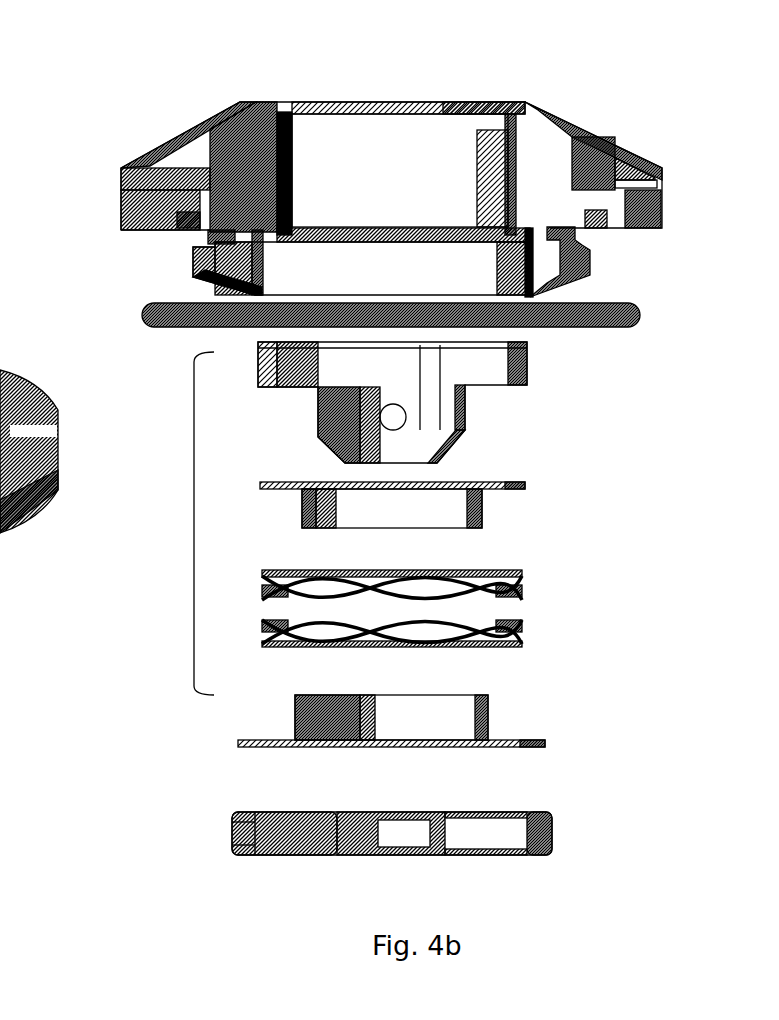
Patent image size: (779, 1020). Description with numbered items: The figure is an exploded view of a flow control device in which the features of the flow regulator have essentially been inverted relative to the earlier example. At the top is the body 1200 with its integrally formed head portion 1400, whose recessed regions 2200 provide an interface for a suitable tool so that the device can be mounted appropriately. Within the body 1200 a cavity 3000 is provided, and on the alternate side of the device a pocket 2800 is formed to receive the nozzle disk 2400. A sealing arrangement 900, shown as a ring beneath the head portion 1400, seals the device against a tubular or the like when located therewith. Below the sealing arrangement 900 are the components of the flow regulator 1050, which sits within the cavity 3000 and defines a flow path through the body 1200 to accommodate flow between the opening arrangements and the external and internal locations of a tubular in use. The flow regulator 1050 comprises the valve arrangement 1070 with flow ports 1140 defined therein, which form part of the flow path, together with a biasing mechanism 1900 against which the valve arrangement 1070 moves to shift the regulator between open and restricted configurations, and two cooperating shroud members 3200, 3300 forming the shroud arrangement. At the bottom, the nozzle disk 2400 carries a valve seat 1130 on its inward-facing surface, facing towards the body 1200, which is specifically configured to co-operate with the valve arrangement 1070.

The head portion 1400 is at (146, 108).
The recessed regions 2200 is at (148, 163).
The cavity 3000 is at (430, 209).
The pocket 2800 is at (500, 273).
The body 1200 is at (36, 407).
The sealing arrangement 900 is at (640, 320).
The flow regulator 1050 is at (194, 523).
The valve arrangement 1070 is at (490, 386).
The flow ports 1140 is at (397, 418).
The shroud member 3200 is at (497, 512).
The biasing mechanism 1900 is at (490, 615).
The shroud member 3300 is at (500, 700).
The valve seat 1130 is at (347, 808).
The nozzle disk 2400 is at (232, 833).